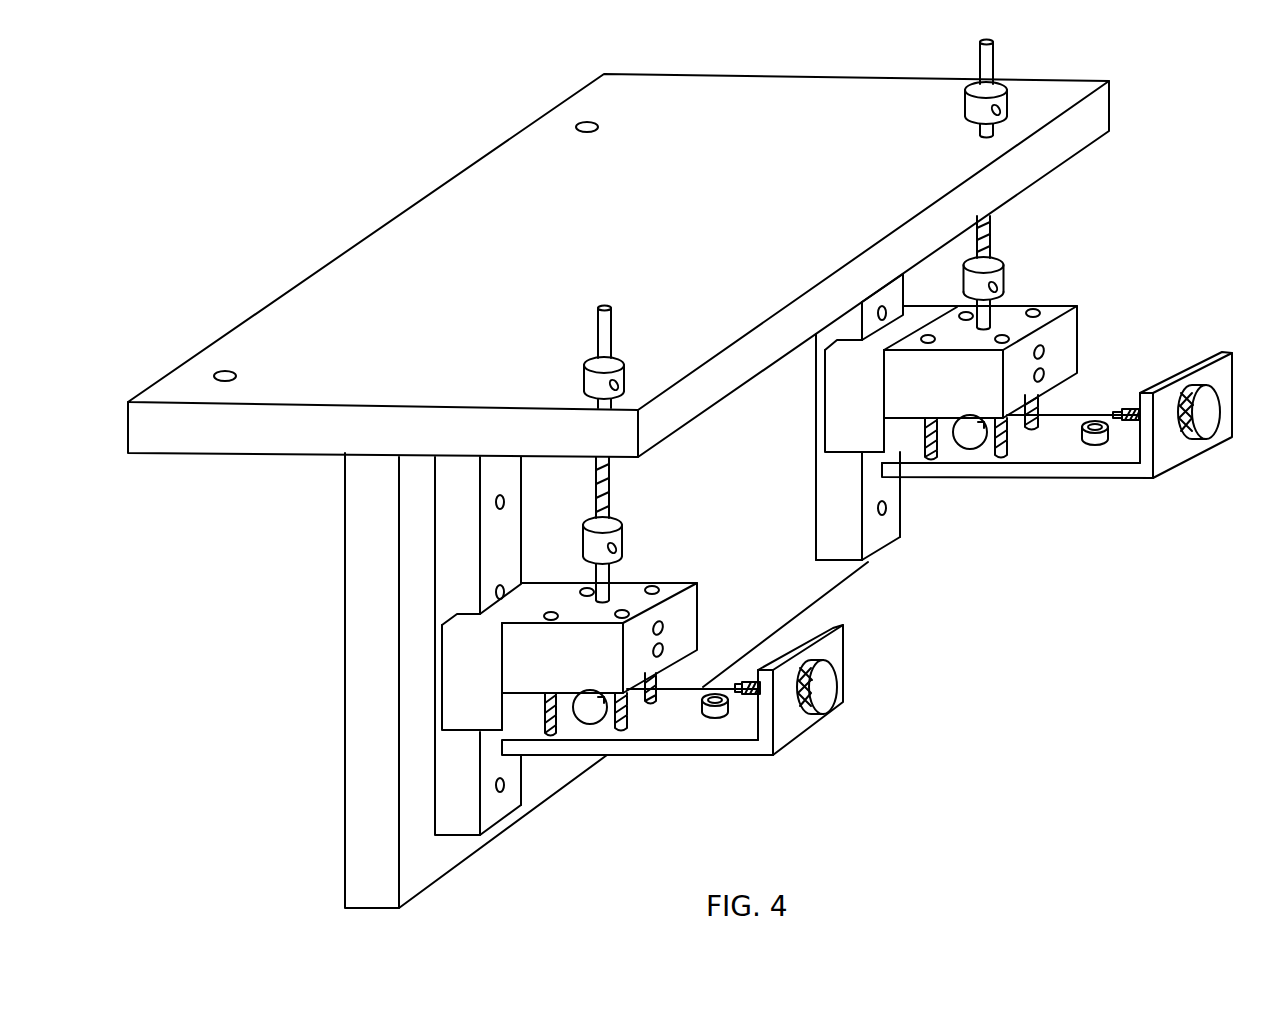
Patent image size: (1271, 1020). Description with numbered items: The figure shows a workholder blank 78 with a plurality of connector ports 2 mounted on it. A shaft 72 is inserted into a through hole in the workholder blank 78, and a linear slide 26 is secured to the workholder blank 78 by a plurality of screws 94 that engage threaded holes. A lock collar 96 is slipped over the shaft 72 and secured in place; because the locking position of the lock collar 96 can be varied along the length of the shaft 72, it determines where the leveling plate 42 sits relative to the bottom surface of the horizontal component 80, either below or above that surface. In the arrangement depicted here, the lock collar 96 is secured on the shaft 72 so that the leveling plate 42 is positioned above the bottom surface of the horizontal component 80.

The connector port 2 is at (737, 762).
The linear slide 26 is at (458, 810).
The leveling plate 42 is at (657, 745).
The shaft 72 is at (617, 317).
The workholder blank 78 is at (374, 229).
The horizontal component 80 is at (367, 833).
The screw 94 is at (500, 800).
The lock collar 96 is at (576, 371).